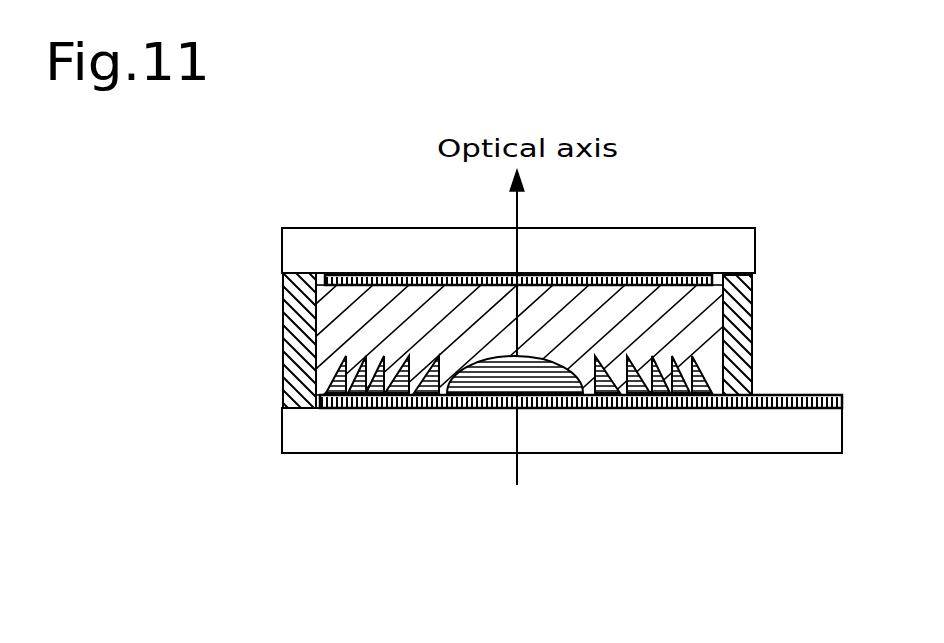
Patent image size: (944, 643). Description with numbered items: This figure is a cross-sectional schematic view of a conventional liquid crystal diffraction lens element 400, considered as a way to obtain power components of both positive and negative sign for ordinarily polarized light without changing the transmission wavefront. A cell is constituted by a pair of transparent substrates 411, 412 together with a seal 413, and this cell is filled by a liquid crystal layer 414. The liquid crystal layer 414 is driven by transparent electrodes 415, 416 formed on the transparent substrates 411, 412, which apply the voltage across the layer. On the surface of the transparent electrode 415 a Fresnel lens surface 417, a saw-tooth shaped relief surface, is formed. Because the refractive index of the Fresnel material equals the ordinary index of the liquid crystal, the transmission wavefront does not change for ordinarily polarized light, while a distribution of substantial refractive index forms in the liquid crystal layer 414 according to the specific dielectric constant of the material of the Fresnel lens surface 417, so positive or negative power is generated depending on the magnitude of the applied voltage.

The liquid crystal diffraction lens element 400 is at (210, 147).
The transparent substrate 411 is at (320, 252).
The transparent substrate 412 is at (317, 437).
The seal 413 is at (283, 352).
The liquid crystal layer 414 is at (340, 327).
The transparent electrode 415 is at (465, 408).
The transparent electrode 416 is at (440, 275).
The Fresnel lens surface 417 is at (540, 408).